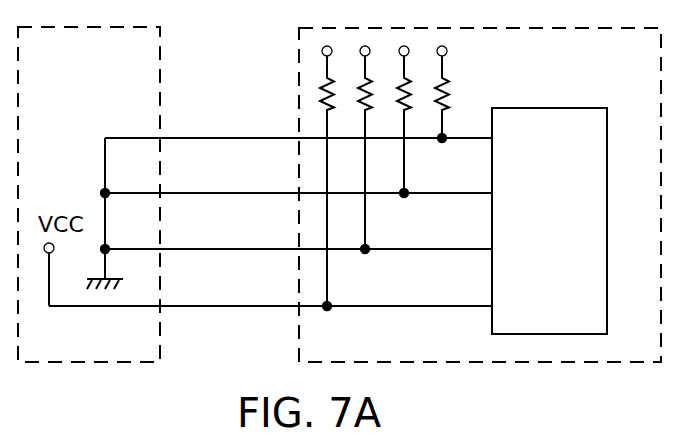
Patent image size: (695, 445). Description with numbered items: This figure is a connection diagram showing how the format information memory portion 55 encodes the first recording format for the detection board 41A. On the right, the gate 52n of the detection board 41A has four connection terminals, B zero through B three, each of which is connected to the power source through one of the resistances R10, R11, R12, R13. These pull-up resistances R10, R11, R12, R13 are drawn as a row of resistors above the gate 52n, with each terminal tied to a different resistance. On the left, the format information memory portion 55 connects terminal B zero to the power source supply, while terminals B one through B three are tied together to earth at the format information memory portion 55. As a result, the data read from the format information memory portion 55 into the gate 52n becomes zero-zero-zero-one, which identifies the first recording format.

The format information memory portion 55 is at (160, 97).
The first detection board 41A is at (530, 362).
The gate 52n is at (540, 108).
The resistance R10 is at (320, 86).
The resistance R11 is at (373, 80).
The resistance R12 is at (409, 110).
The resistance R13 is at (449, 101).